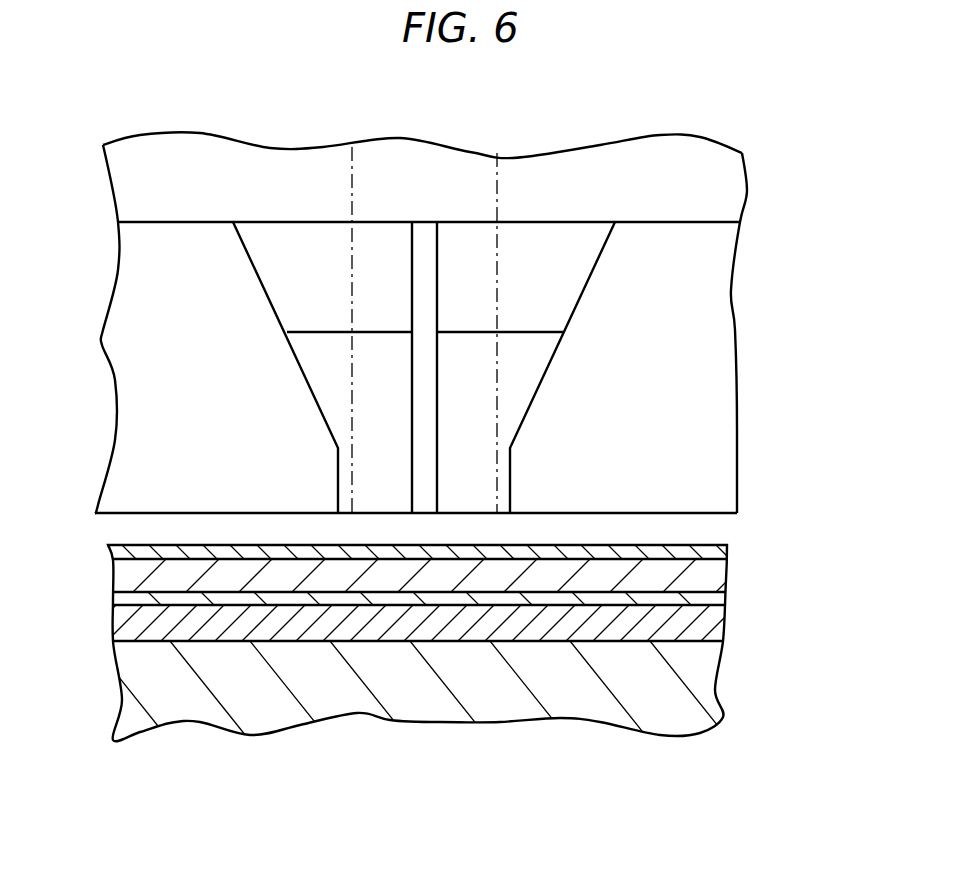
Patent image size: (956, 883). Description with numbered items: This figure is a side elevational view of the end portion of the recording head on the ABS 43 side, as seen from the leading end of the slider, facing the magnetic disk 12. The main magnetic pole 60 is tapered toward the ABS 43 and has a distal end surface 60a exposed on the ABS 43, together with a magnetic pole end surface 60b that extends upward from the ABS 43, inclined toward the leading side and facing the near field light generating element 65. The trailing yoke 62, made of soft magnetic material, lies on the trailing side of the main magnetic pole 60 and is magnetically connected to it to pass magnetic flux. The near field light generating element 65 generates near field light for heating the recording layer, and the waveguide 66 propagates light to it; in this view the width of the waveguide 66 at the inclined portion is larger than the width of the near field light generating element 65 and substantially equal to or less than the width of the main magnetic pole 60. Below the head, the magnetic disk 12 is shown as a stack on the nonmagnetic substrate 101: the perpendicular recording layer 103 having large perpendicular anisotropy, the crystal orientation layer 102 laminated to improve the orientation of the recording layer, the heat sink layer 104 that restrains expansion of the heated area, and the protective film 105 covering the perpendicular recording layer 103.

The magnetic disk 12 is at (447, 671).
The ABS 43 is at (645, 513).
The main magnetic pole 60 is at (432, 310).
The distal end surface 60a is at (377, 513).
The magnetic pole end surface 60b is at (328, 372).
The trailing yoke 62 is at (165, 278).
The near field light generating element 65 is at (428, 270).
The waveguide 66 is at (350, 195).
The substrate 101 is at (705, 680).
The crystal orientation layer 102 is at (713, 598).
The perpendicular recording layer 103 is at (713, 572).
The heat sink layer 104 is at (718, 623).
The protective film 105 is at (713, 545).